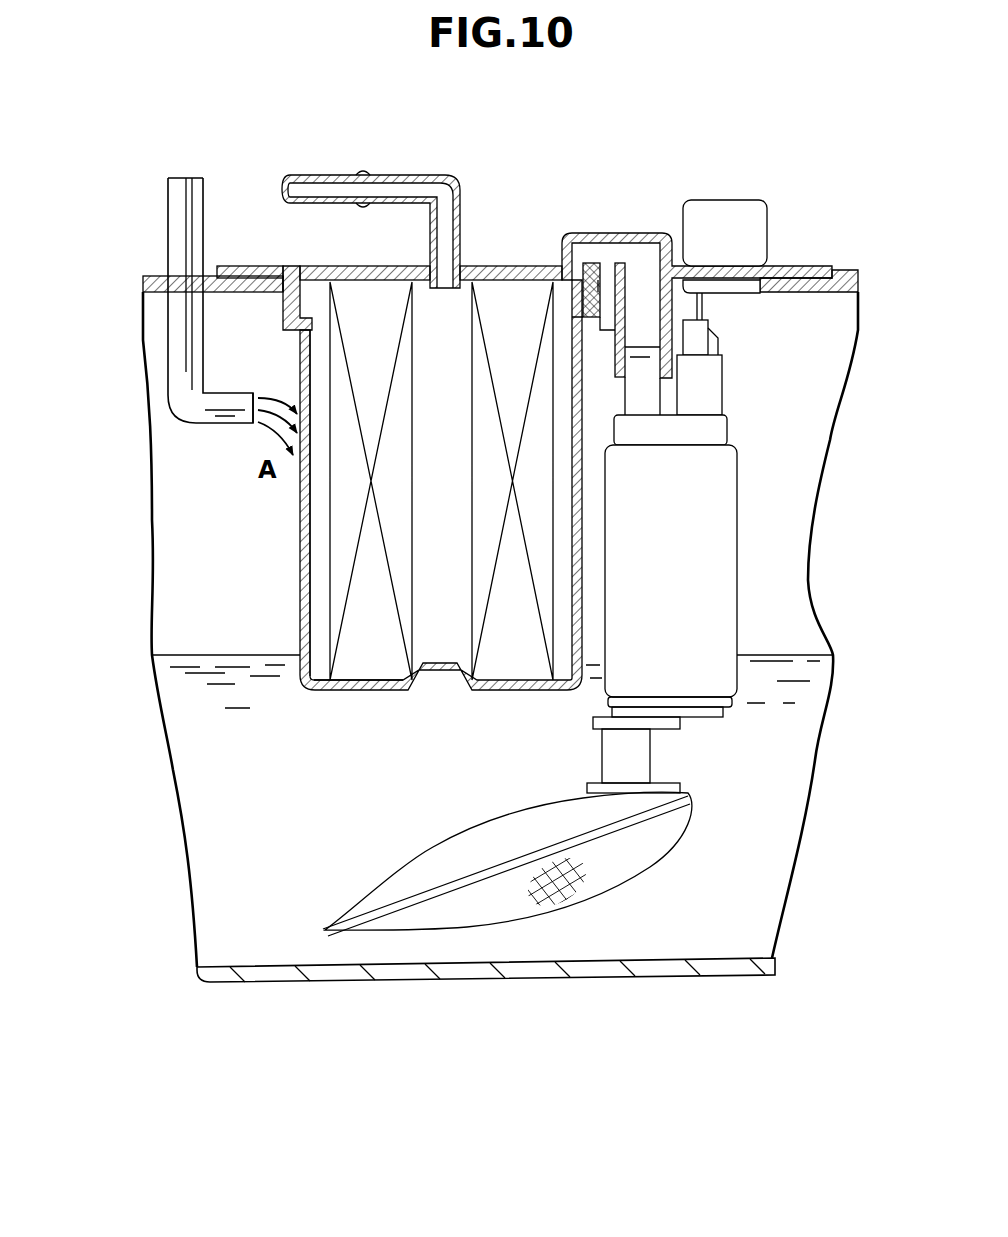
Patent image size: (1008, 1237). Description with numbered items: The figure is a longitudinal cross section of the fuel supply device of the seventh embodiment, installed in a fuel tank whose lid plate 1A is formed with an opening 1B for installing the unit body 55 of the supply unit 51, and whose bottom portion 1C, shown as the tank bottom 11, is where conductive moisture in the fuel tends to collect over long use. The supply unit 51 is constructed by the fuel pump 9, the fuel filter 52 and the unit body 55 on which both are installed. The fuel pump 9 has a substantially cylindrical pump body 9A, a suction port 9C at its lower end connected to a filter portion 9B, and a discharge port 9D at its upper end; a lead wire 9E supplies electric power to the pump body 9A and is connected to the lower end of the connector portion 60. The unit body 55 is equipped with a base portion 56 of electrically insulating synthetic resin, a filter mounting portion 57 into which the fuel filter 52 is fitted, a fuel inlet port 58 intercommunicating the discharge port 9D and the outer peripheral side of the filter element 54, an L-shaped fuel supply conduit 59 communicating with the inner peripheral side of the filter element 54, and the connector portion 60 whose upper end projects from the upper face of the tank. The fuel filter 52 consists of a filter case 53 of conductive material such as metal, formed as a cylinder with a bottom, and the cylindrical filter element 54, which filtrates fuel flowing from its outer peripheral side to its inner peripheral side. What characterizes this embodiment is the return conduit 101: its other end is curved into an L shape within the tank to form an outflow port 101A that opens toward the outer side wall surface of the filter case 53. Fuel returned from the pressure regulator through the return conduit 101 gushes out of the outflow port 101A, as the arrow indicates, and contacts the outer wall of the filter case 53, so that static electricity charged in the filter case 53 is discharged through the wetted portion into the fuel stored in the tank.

The lid plate 1A is at (160, 283).
The opening 1B is at (282, 280).
The bottom portion 1C is at (590, 968).
The tank bottom plate 11 is at (486, 1013).
The fuel pump 9 is at (614, 618).
The pump body 9A is at (720, 626).
The filter portion 9B is at (435, 907).
The suction port 9C is at (640, 750).
The discharge port 9D is at (638, 390).
The lead wire 9E is at (703, 313).
The supply unit 51 is at (578, 228).
The fuel filter 52 is at (297, 563).
The filter case 53 is at (303, 595).
The filter element 54 is at (347, 662).
The unit body 55 is at (497, 256).
The base portion 56 is at (343, 267).
The filter mounting portion 57 is at (285, 290).
The fuel inlet port 58 is at (660, 295).
The fuel supply conduit 59 is at (322, 175).
The connector portion 60 is at (738, 215).
The return conduit 101 is at (182, 188).
The outflow port 101A is at (220, 418).